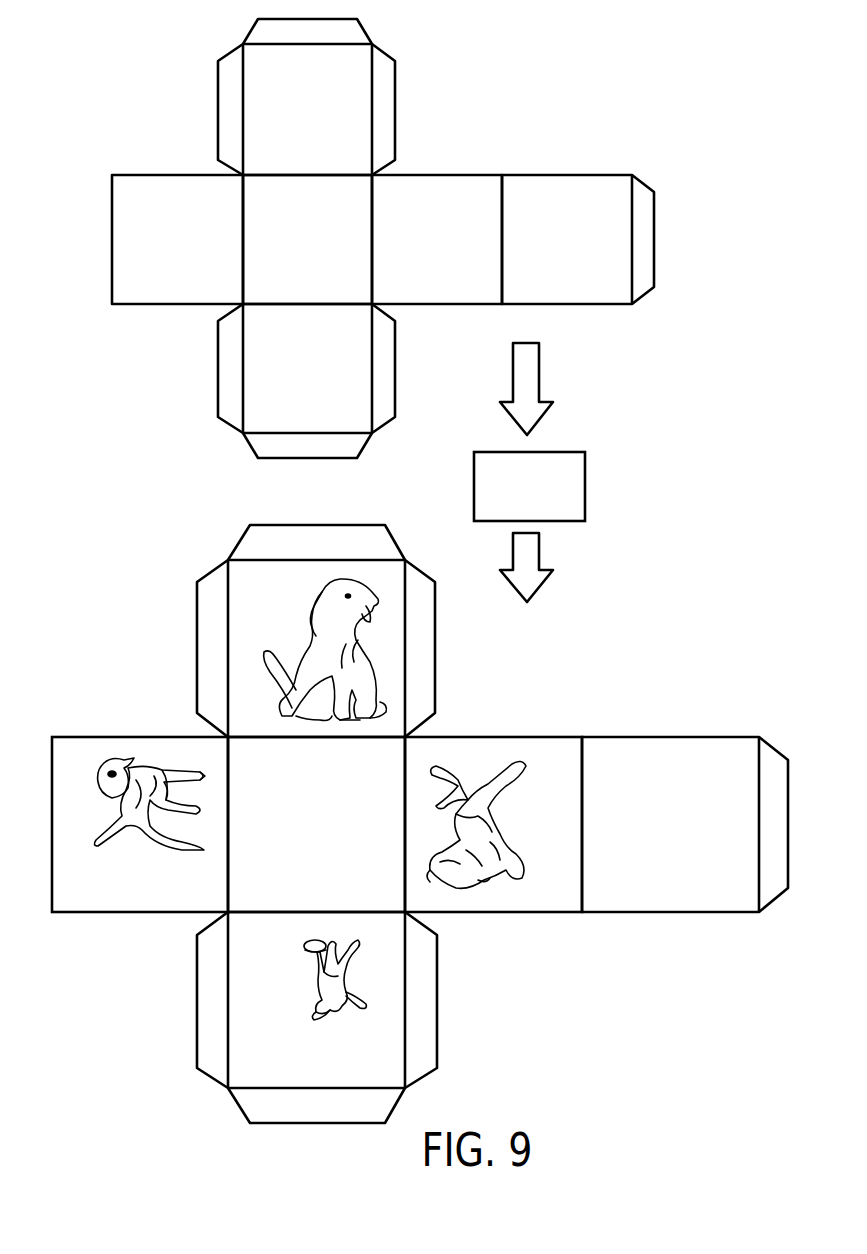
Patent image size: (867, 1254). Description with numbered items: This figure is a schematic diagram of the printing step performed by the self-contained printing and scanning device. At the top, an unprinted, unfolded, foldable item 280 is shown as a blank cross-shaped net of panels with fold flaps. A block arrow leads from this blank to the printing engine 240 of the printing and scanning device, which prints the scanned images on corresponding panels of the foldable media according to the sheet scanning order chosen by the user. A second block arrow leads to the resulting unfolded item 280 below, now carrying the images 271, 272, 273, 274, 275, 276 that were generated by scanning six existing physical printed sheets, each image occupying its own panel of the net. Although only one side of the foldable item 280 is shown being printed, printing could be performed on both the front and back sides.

The foldable item 280 is at (456, 142).
The printing engine 240 is at (585, 487).
The image 271 is at (394, 574).
The image 272 is at (493, 752).
The image 273 is at (390, 1071).
The image 274 is at (168, 902).
The image 275 is at (722, 752).
The image 276 is at (255, 758).